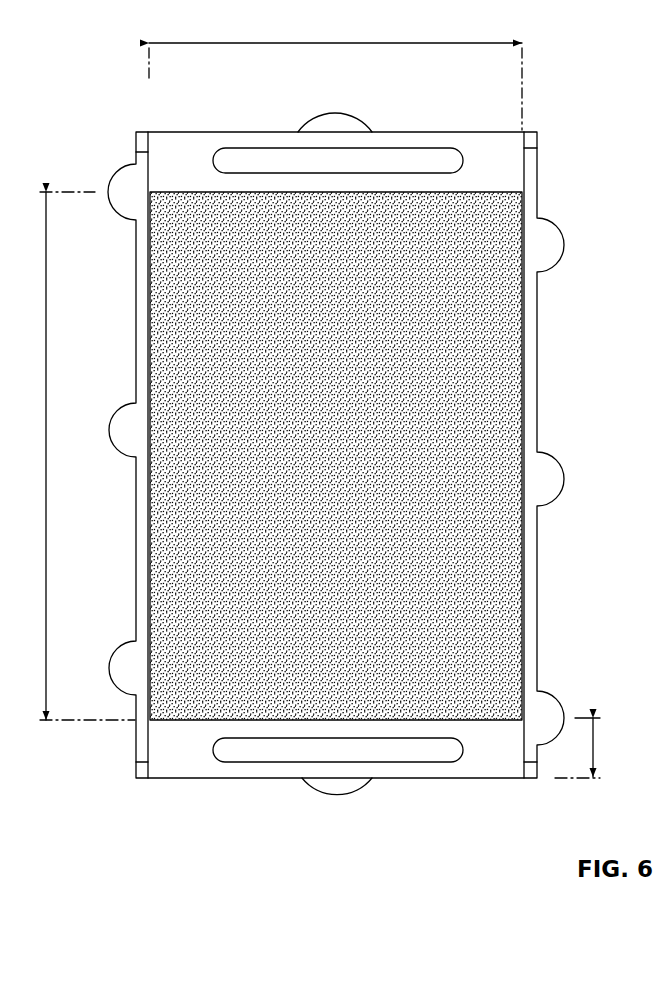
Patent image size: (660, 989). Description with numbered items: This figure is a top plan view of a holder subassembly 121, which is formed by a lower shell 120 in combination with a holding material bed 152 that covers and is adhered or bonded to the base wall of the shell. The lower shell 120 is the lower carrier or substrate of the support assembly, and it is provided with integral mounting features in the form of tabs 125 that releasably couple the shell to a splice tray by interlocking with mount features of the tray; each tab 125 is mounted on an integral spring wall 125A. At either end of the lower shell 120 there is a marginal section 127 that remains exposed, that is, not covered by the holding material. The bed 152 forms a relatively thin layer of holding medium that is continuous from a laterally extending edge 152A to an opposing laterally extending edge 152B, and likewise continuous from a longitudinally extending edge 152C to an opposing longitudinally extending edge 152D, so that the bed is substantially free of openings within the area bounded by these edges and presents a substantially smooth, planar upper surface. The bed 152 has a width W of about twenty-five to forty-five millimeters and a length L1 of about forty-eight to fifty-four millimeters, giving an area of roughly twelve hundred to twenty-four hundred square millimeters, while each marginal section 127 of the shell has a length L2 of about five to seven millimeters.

The lower shell 120 is at (172, 130).
The holder subassembly 121 is at (552, 92).
The tab 125 is at (338, 120).
The spring wall 125A is at (266, 140).
The marginal section 127 is at (190, 165).
The holding material bed 152 is at (510, 352).
The laterally extending edge 152A is at (470, 190).
The opposing laterally extending edge 152B is at (482, 725).
The longitudinally extending edge 152C is at (525, 428).
The opposing longitudinally extending edge 152D is at (148, 342).
The width W is at (334, 43).
The length L1 is at (47, 455).
The length of marginal section L2 is at (595, 744).